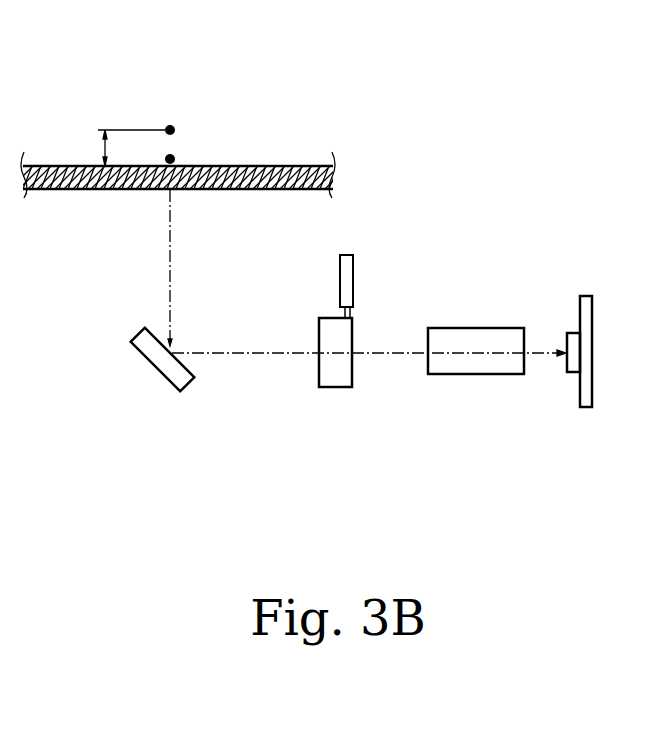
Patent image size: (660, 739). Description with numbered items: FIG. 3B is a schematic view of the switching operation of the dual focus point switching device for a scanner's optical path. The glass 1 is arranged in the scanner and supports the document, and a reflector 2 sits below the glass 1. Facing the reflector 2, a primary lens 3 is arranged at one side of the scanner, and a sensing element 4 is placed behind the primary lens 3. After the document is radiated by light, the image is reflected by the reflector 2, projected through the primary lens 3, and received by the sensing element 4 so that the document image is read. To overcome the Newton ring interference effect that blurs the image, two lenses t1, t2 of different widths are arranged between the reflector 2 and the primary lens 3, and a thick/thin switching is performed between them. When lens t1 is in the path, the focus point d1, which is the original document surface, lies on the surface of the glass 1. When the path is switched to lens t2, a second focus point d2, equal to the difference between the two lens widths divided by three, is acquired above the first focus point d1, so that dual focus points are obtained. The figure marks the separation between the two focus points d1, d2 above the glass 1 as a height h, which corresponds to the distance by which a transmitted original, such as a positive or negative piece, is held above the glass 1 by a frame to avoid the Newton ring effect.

The glass 1 is at (283, 166).
The reflector 2 is at (162, 365).
The primary lens 3 is at (488, 365).
The sensing element 4 is at (587, 370).
The lens t1 is at (347, 260).
The lens t2 is at (337, 377).
The focus point d1 is at (173, 157).
The second focus point d2 is at (170, 126).
The focal shift height h is at (119, 148).